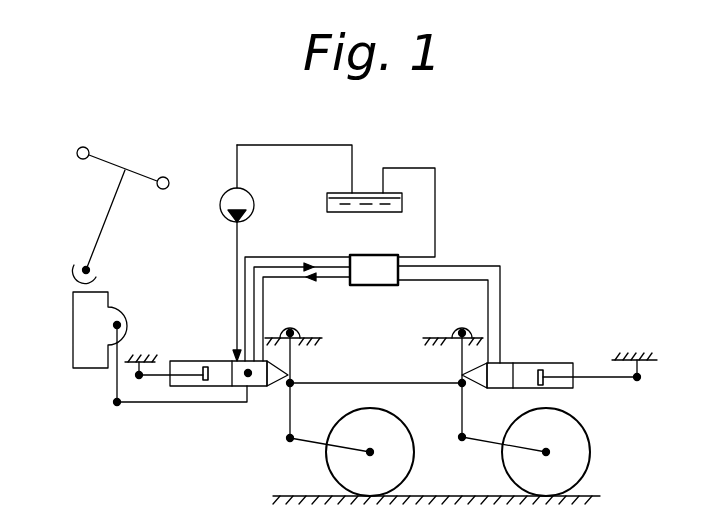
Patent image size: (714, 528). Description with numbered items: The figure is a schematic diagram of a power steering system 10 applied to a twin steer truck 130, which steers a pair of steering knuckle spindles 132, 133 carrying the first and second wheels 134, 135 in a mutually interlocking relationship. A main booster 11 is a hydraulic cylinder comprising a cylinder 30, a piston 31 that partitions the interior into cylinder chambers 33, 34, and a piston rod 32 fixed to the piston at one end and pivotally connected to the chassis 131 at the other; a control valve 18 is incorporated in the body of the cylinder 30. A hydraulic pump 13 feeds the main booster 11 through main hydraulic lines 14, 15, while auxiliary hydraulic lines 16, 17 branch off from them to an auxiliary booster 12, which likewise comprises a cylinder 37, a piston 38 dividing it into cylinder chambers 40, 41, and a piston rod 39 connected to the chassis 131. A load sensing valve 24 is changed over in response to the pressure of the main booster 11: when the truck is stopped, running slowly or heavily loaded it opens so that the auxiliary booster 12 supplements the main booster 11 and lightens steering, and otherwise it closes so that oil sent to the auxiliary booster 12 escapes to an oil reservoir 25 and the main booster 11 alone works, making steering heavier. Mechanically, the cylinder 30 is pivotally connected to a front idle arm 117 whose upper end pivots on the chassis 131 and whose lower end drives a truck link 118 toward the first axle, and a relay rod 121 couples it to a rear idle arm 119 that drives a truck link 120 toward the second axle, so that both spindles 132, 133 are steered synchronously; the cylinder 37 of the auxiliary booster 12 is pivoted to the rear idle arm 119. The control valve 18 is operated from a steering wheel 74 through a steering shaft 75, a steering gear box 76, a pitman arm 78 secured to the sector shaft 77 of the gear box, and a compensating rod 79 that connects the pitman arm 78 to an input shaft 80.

The power steering system 10 is at (387, 116).
The main booster 11 is at (199, 381).
The auxiliary booster 12 is at (552, 331).
The hydraulic pump 13 is at (224, 188).
The main hydraulic line 14 is at (234, 252).
The main hydraulic line 15 is at (286, 250).
The auxiliary hydraulic line 16 is at (331, 266).
The auxiliary hydraulic line 17 is at (322, 279).
The control valve 18 is at (266, 388).
The load sensing valve 24 is at (377, 286).
The oil reservoir 25 is at (404, 206).
The cylinder 30 is at (180, 388).
The piston 31 is at (205, 388).
The piston rod 32 is at (152, 377).
The cylinder chamber 33 is at (222, 363).
The cylinder chamber 34 is at (178, 363).
The cylinder 37 is at (527, 362).
The piston 38 is at (545, 383).
The piston rod 39 is at (637, 380).
The cylinder chamber 40 is at (568, 363).
The cylinder chamber 41 is at (512, 363).
The steering wheel 74 is at (111, 163).
The steering shaft 75 is at (101, 228).
The steering gear box 76 is at (82, 353).
The sector shaft 77 is at (127, 318).
The pitman arm 78 is at (115, 390).
The compensating rod 79 is at (230, 388).
The input shaft 80 is at (248, 380).
The idle arm 117 is at (296, 408).
The truck link 118 is at (300, 440).
The idle arm 119 is at (468, 415).
The truck link 120 is at (486, 440).
The relay rod 121 is at (427, 385).
The twin steer truck 130 is at (612, 335).
The chassis 131 is at (152, 358).
The steering knuckle spindle 132 is at (371, 452).
The steering knuckle spindle 133 is at (546, 452).
The first wheel 134 is at (414, 470).
The second wheel 135 is at (590, 452).